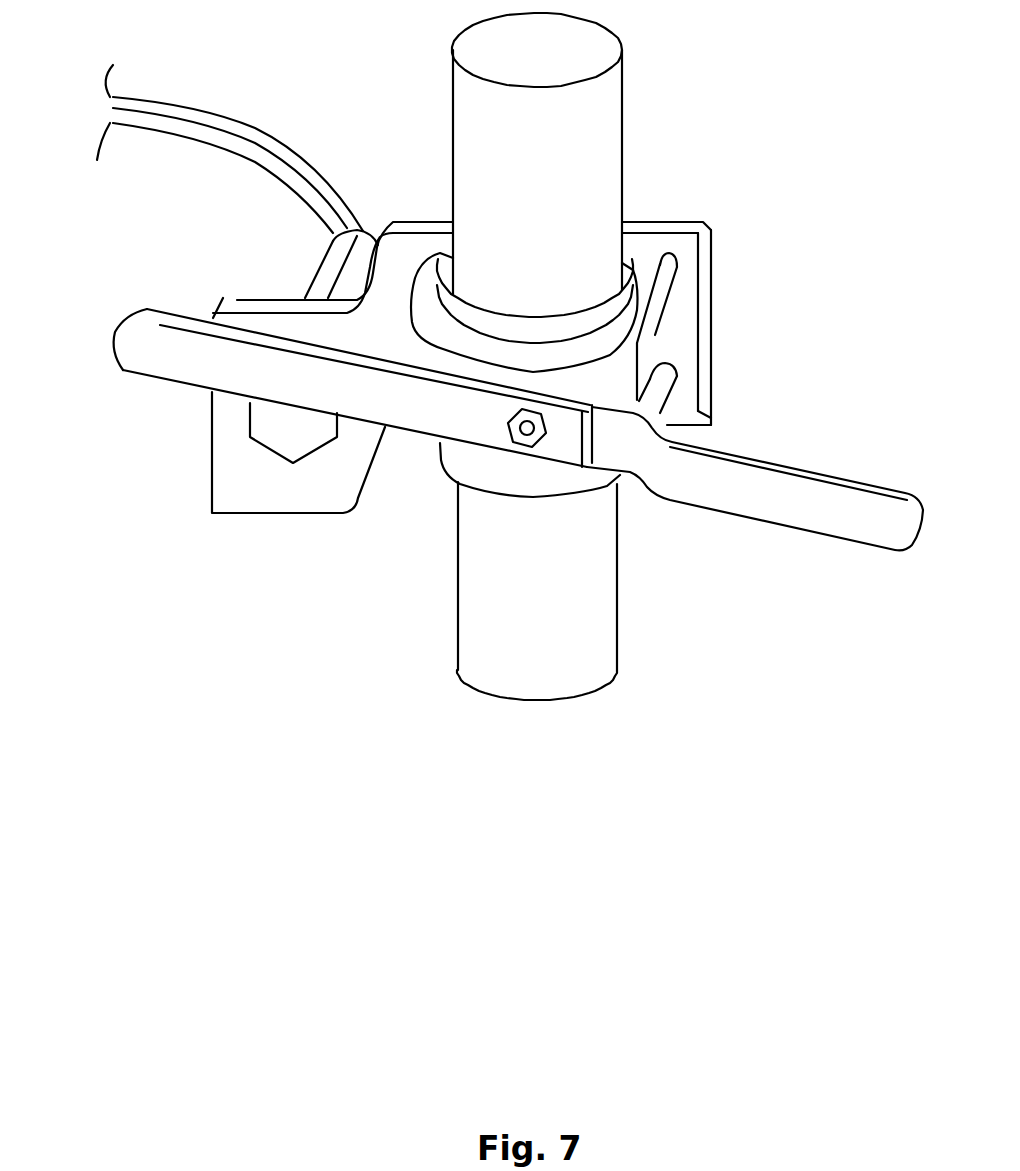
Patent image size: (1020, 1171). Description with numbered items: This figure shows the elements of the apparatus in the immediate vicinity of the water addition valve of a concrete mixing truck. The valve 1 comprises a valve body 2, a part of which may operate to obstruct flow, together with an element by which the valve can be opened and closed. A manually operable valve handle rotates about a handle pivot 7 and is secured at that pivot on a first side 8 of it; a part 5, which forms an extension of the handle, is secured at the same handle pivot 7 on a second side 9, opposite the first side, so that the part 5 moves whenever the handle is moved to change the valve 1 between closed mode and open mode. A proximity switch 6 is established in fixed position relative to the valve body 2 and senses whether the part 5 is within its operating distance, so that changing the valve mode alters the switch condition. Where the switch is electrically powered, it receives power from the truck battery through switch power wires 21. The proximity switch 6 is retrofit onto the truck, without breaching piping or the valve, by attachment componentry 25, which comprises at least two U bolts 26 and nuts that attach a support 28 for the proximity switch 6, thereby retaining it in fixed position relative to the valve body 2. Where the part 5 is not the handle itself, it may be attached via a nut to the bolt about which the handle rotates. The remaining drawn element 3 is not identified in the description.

The valve 1 is at (690, 467).
The valve body 2 is at (613, 380).
The lever arm 3 is at (733, 466).
The part 5 is at (377, 403).
The proximity switch 6 is at (270, 425).
The handle pivot 7 is at (523, 434).
The first side 8 is at (647, 510).
The second side 9 is at (443, 413).
The switch power wires 21 is at (268, 123).
The attachment componentry 25 is at (667, 263).
The U bolts 26 is at (432, 266).
The support 28 is at (692, 268).